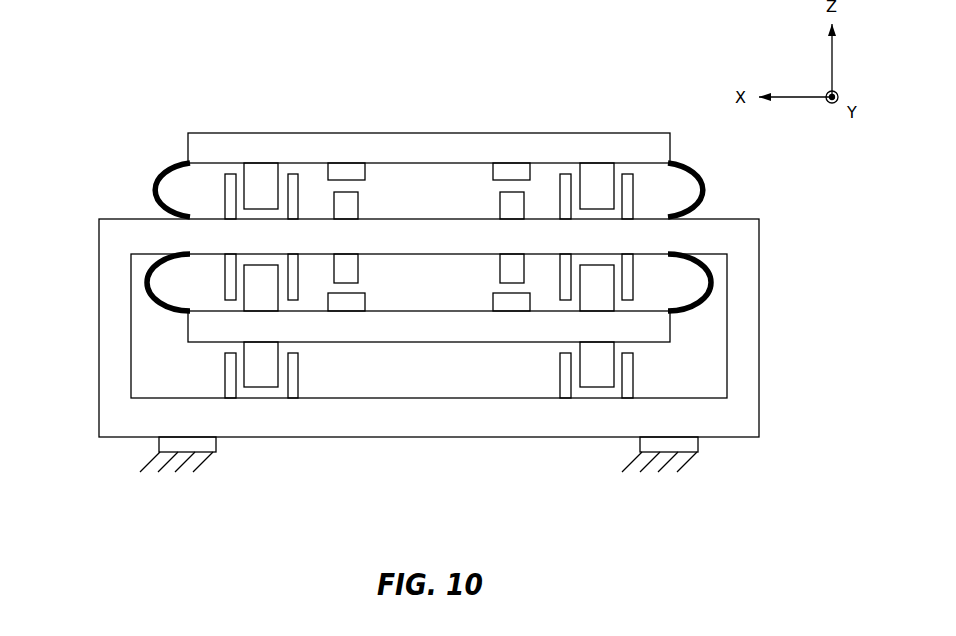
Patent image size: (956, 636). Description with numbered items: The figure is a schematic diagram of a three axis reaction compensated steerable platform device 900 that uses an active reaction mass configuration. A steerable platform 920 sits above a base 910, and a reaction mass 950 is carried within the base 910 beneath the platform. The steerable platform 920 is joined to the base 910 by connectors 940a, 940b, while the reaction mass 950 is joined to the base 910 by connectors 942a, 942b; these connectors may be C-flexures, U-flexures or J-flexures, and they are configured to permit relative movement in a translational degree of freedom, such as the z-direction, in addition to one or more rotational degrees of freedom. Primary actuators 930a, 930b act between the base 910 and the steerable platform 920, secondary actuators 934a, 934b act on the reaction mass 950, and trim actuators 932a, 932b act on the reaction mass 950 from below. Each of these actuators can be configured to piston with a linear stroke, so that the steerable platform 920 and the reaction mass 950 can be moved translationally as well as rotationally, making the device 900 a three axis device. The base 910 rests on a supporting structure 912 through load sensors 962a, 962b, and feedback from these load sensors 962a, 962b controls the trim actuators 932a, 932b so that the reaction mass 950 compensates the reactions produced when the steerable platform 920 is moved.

The reaction compensated steerable platform device 900 is at (240, 62).
The base 910 is at (99, 308).
The supporting structure 912 is at (160, 476).
The steerable platform 920 is at (440, 133).
The primary actuator 930a is at (218, 187).
The primary actuator 930b is at (642, 192).
The trim actuator 932a is at (306, 371).
The trim actuator 932b is at (548, 374).
The secondary actuator 934a is at (218, 277).
The secondary actuator 934b is at (642, 273).
The connector 940a is at (148, 190).
The connector 940b is at (711, 185).
The connector 942a is at (148, 287).
The connector 942b is at (711, 287).
The reaction mass 950 is at (188, 338).
The load sensor 962a is at (159, 451).
The load sensor 962b is at (698, 451).